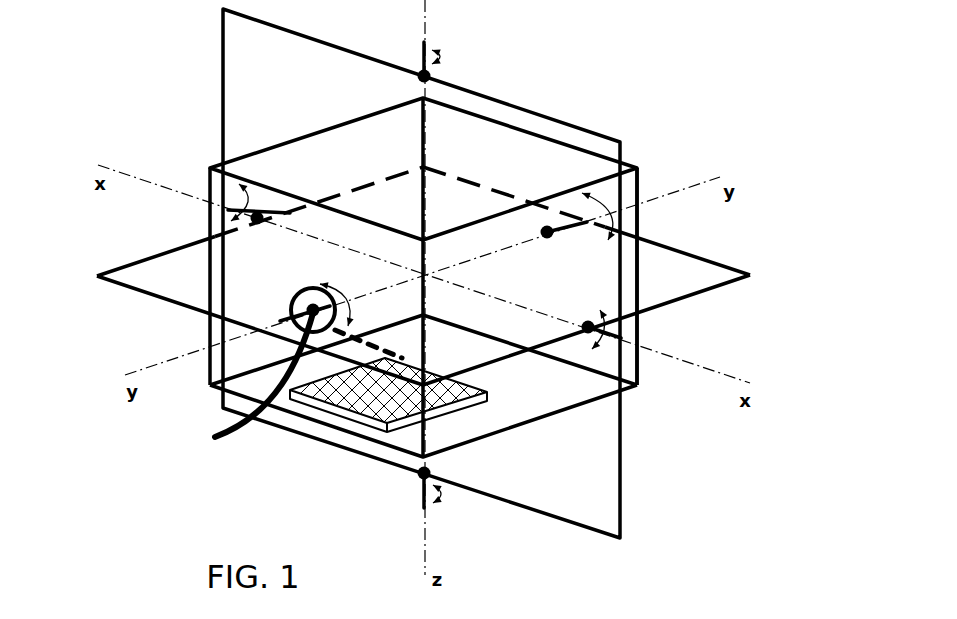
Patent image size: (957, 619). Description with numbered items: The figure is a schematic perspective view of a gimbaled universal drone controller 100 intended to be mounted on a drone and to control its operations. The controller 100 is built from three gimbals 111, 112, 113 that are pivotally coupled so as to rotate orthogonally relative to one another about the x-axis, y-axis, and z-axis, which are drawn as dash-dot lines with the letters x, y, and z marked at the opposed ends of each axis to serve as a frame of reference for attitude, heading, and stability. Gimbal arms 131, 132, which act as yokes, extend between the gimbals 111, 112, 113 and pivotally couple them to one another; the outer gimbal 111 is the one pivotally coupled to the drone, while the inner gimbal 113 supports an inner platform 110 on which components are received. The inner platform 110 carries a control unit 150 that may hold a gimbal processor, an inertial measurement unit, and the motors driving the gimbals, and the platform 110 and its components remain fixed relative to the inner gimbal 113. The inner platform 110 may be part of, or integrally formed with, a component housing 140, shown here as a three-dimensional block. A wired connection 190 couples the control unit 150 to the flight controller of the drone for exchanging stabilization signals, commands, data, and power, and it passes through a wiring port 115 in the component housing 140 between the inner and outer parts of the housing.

The gimbaled universal drone controller 100 is at (632, 78).
The inner platform 110 is at (423, 286).
The outer gimbal 111 is at (391, 266).
The gimbal 112 is at (422, 275).
The inner gimbal 113 is at (381, 260).
The wiring port 115 is at (297, 290).
The gimbal arm 131 is at (493, 98).
The gimbal arm 132 is at (425, 276).
The component housing 140 is at (683, 276).
The control unit 150 is at (483, 383).
The wired connection 190 is at (308, 395).